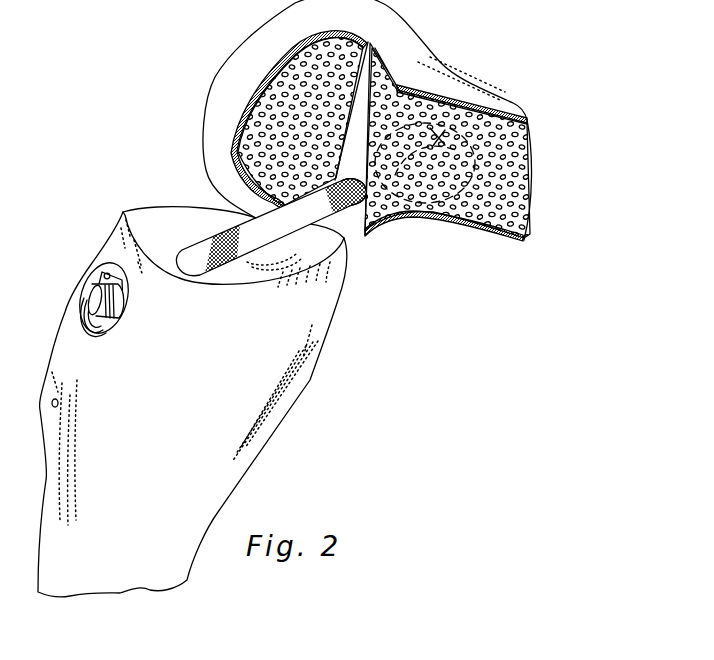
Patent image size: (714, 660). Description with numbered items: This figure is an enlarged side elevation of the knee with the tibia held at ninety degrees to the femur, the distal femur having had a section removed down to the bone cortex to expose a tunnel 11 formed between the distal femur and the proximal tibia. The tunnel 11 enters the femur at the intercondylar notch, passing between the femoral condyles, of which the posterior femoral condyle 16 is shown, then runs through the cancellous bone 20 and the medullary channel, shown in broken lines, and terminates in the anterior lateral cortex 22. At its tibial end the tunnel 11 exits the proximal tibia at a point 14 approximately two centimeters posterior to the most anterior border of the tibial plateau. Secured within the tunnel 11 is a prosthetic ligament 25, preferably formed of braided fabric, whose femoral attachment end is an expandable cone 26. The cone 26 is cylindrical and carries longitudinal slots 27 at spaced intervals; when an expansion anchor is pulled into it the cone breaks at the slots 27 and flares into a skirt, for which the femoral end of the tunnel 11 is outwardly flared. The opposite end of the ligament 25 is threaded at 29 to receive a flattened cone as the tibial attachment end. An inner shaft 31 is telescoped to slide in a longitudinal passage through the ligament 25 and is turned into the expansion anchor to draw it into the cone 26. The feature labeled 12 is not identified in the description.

The tunnel 11 is at (363, 212).
The opening in femur 12 is at (88, 285).
The point 14 is at (178, 250).
The posterior femoral condyle 16 is at (256, 37).
The cancellous bone 20 is at (232, 143).
The anterior lateral cortex 22 is at (453, 205).
The prosthetic ligament 25 is at (340, 232).
The expandable cone 26 is at (430, 153).
The longitudinal slots 27 is at (478, 110).
The threaded prosthetic ligament tibial end 29 is at (93, 302).
The inner shaft 31 is at (130, 280).